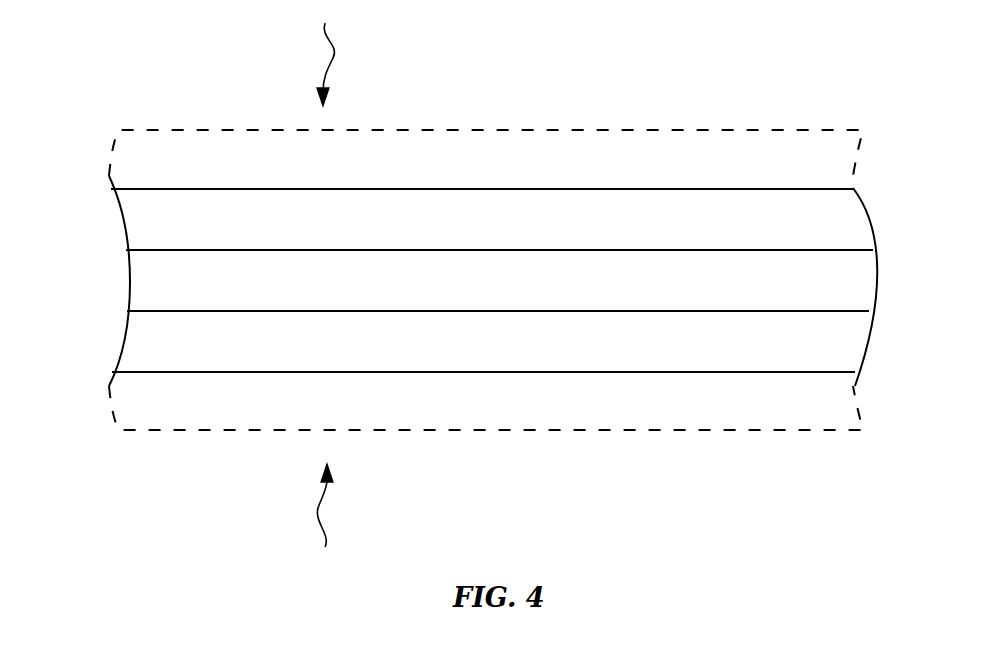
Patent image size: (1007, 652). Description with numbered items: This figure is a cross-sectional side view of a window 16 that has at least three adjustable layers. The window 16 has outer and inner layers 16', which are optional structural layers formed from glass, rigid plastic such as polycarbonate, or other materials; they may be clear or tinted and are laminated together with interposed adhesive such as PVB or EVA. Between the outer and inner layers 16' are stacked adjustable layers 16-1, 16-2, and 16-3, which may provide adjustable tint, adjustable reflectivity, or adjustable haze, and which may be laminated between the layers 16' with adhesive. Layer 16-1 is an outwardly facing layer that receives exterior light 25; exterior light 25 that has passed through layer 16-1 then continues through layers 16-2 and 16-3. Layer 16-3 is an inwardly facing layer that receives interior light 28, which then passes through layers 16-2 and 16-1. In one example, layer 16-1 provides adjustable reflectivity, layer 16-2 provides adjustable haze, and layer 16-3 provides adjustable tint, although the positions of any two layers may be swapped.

The window 16 is at (519, 243).
The outer and inner layers 16' is at (459, 276).
The adjustable layer 16-1 is at (139, 218).
The adjustable layer 16-2 is at (139, 277).
The adjustable layer 16-3 is at (139, 336).
The exterior light 25 is at (332, 52).
The interior light 28 is at (318, 508).